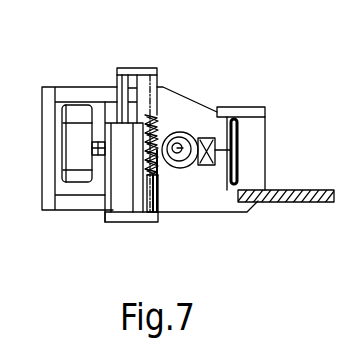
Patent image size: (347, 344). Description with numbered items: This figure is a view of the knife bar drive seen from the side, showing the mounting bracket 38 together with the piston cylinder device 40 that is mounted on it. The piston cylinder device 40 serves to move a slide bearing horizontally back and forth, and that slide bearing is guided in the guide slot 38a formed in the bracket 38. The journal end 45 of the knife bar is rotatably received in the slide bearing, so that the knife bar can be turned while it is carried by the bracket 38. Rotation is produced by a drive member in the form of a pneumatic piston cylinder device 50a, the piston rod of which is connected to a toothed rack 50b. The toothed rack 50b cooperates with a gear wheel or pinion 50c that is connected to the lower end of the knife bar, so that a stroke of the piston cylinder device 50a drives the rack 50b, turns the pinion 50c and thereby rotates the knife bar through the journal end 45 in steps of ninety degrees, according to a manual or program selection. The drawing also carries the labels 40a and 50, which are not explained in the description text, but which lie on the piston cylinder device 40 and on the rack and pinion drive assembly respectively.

The mounting bracket 38 is at (190, 110).
The guide slot 38a is at (232, 148).
The piston cylinder device 40 is at (76, 106).
The pin 40a is at (92, 182).
The journal end 45 is at (183, 168).
The adjusting device 50 is at (94, 252).
The pneumatic piston cylinder device 50a is at (124, 198).
The toothed rack 50b is at (163, 80).
The gear wheel or pinion 50c is at (175, 177).